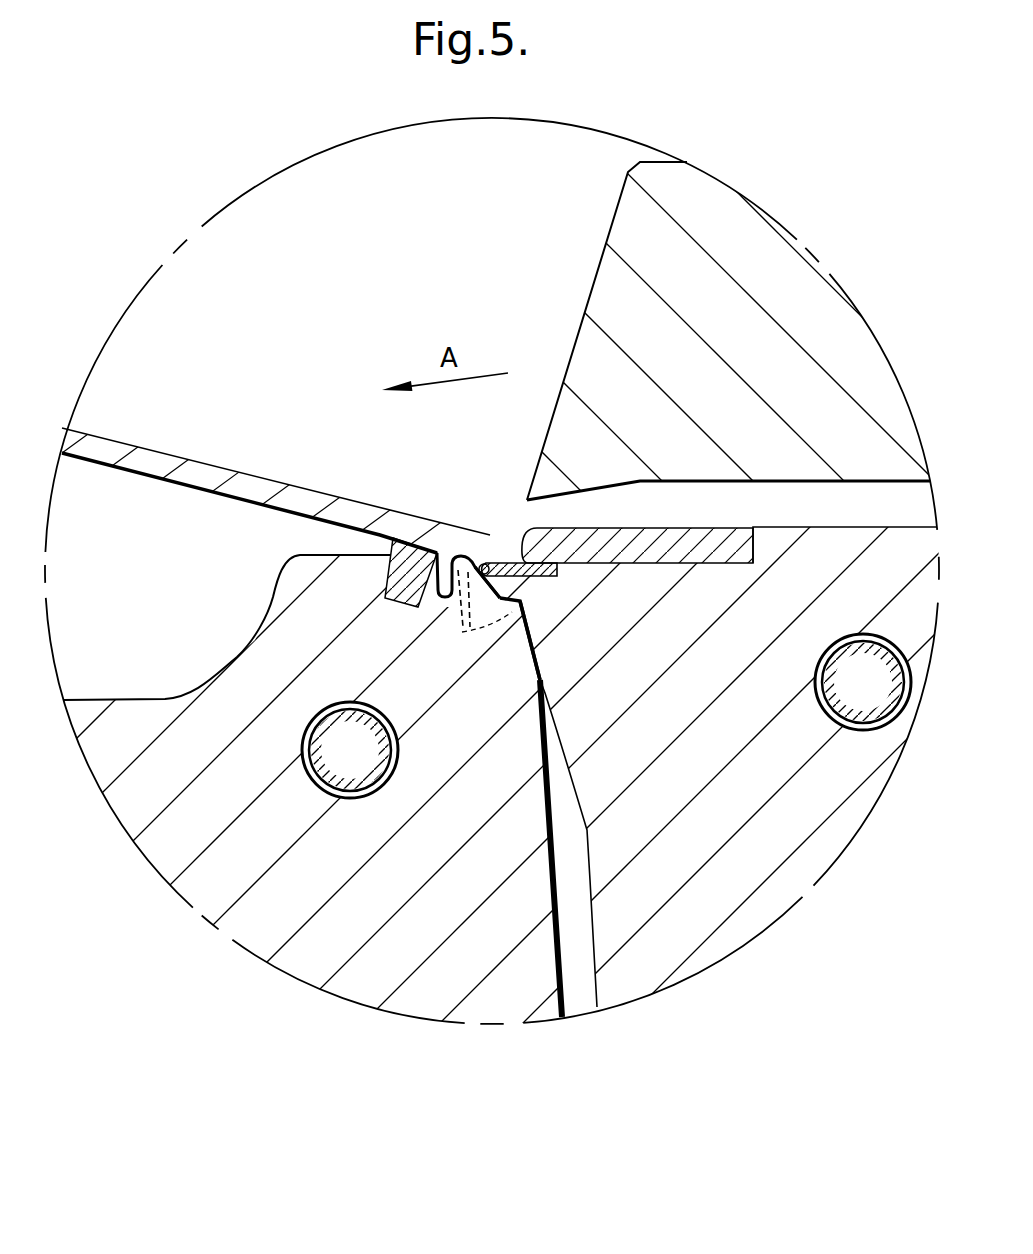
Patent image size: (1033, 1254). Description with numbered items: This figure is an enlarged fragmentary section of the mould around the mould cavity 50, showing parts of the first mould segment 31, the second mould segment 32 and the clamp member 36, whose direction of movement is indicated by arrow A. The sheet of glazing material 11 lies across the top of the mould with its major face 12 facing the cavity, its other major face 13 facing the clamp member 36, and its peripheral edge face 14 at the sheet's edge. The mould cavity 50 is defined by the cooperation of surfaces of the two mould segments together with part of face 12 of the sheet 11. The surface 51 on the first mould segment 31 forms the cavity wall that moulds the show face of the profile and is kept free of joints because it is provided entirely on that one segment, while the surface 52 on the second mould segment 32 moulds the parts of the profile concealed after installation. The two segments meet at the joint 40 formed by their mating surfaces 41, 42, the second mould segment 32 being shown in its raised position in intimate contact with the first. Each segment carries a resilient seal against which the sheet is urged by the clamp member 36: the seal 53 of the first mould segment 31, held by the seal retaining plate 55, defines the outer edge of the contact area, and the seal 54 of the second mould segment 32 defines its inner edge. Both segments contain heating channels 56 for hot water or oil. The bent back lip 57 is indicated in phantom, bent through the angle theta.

The sheet of glazing material 11 is at (299, 479).
The major face 12 is at (252, 512).
The major face 13 is at (264, 468).
The peripheral edge face 14 is at (494, 556).
The first mould segment 31 is at (793, 866).
The second mould segment 32 is at (273, 917).
The clamp member 36 is at (790, 270).
The joint 40 is at (578, 803).
The mating surface 41 is at (530, 684).
The mating surface 42 is at (550, 650).
The mould cavity 50 is at (443, 572).
The surface 51 is at (493, 615).
The surface 52 is at (472, 550).
The seal 53 is at (553, 567).
The seal 54 is at (387, 607).
The seal retaining plate 55 is at (715, 555).
The heating channels 56 is at (364, 766).
The bent back lip 57 is at (463, 623).